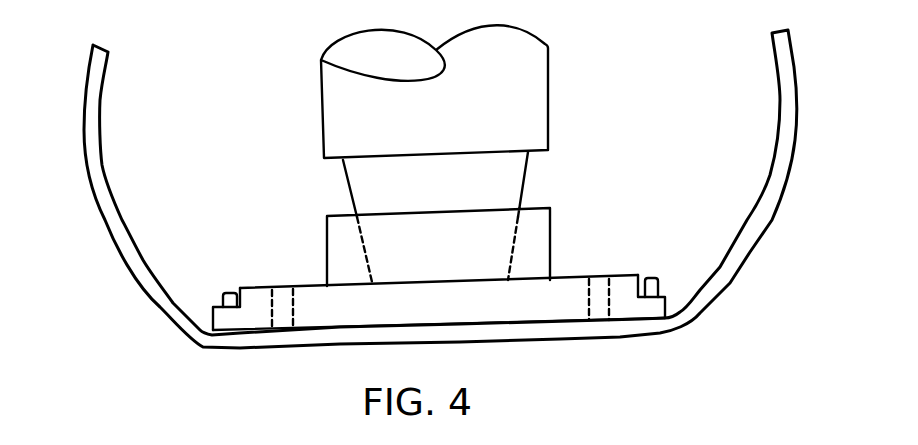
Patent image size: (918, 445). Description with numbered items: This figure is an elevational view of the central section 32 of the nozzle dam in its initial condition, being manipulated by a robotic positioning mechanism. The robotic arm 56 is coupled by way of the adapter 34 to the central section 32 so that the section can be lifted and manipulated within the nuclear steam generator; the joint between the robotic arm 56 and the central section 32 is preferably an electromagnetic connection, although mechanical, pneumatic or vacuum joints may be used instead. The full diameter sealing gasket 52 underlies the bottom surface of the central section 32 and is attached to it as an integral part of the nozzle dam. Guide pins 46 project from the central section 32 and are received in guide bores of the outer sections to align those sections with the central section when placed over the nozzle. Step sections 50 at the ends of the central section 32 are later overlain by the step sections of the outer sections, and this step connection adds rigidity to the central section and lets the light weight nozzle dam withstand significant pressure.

The central section 32 is at (572, 278).
The adapter 34 is at (325, 230).
The guide pins 46 is at (223, 292).
The step sections 50 is at (237, 325).
The gasket 52 is at (777, 212).
The robotic arm 56 is at (321, 115).